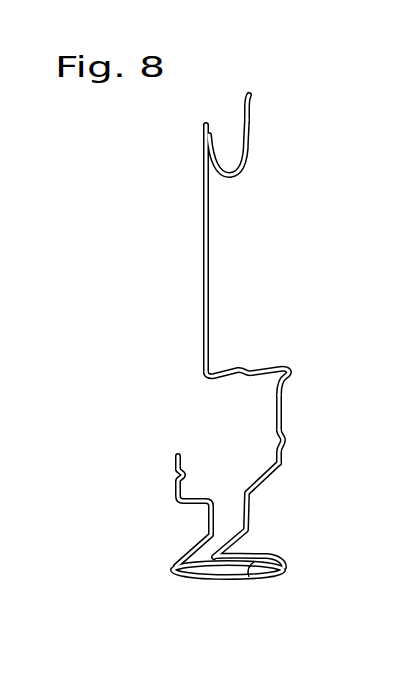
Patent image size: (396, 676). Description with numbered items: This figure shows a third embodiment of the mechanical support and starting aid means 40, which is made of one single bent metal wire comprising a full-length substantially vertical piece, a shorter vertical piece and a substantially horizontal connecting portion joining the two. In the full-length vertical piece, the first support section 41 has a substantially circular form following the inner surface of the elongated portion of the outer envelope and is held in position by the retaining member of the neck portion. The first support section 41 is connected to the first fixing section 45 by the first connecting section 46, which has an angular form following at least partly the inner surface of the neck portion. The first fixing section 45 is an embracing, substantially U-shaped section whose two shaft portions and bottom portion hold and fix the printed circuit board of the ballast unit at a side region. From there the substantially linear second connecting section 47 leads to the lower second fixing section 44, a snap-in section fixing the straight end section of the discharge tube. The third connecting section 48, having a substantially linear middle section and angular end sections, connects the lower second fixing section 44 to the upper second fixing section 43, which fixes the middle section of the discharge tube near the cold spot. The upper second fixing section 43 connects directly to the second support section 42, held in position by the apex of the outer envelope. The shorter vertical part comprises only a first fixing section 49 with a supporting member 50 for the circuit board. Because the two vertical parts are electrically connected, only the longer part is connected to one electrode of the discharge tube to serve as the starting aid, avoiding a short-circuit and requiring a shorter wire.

The mechanical support and starting aid means 40 is at (153, 248).
The first support section 41 is at (252, 562).
The second support section 42 is at (250, 97).
The upper second fixing section 43 is at (245, 170).
The lower second fixing section 44 is at (281, 383).
The first fixing section 45 is at (283, 443).
The first connecting section 46 is at (277, 465).
The second connecting section 47 is at (277, 407).
The third connecting section 48 is at (209, 262).
The first fixing section 49 is at (176, 454).
The supporting member 50 is at (174, 477).